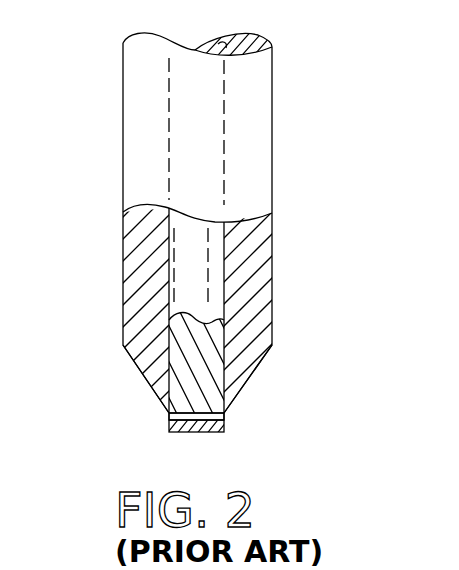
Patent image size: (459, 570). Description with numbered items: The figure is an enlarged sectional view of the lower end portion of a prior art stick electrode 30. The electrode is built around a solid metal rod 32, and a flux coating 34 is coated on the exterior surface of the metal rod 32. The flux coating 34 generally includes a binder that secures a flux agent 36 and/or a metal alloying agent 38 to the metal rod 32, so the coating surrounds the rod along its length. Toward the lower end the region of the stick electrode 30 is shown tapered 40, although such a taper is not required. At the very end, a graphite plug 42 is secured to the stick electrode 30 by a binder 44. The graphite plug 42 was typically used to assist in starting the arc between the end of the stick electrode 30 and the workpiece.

The stick electrode 30 is at (302, 118).
The solid metal rod 32 is at (183, 335).
The flux coating 34 is at (122, 132).
The flux agent 36 is at (132, 172).
The metal alloying agent 38 is at (247, 140).
The tapered end region 40 is at (257, 366).
The graphite plug 42 is at (169, 424).
The binder 44 is at (213, 432).